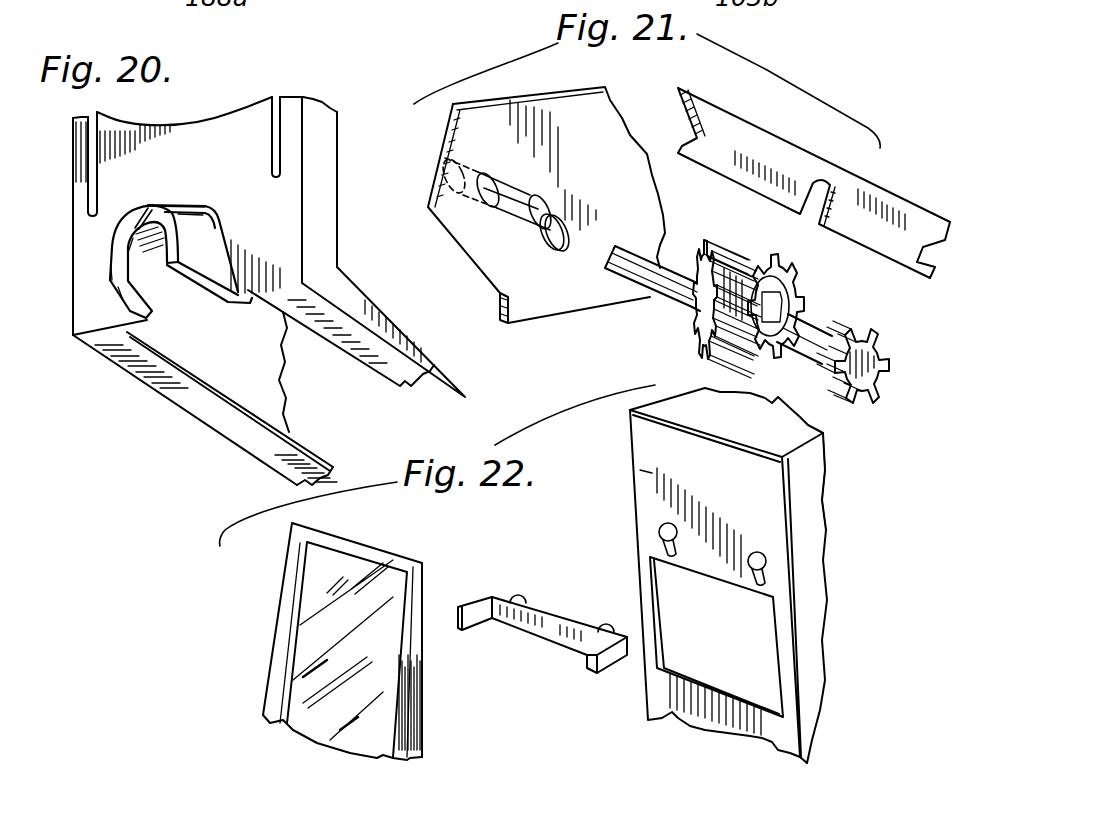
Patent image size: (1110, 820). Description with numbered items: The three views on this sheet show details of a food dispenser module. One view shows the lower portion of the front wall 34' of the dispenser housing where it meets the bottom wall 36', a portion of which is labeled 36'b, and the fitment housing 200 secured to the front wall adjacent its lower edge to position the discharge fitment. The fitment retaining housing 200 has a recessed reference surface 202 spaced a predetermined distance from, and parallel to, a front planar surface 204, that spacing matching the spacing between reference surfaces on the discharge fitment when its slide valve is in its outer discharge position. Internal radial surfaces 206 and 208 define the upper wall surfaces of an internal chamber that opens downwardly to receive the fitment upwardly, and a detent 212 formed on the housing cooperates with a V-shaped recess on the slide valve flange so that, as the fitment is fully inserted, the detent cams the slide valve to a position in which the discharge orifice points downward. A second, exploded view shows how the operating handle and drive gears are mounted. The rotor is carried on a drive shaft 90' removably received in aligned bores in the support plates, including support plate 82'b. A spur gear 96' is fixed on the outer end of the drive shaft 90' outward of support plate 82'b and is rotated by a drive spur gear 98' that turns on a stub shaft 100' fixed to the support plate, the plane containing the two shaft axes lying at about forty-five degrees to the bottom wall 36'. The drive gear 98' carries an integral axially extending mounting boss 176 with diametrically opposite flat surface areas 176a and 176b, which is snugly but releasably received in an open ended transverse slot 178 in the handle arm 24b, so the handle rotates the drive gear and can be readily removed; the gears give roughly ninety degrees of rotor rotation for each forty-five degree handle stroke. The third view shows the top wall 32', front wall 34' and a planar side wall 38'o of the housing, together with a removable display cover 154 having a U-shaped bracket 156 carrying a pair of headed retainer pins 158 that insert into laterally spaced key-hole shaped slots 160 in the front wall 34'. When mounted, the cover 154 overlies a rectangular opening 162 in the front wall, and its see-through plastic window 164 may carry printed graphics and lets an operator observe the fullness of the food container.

In FIG. 20, the front wall 34' is at (233, 216).
In FIG. 21, the front wall 34' is at (609, 471).
In FIG. 20, the bottom wall 36' is at (269, 376).
In FIG. 20, the flange portion 36'b is at (341, 361).
In FIG. 20, the fitment retaining housing 200 is at (123, 300).
In FIG. 20, the recessed reference surface 202 is at (148, 318).
In FIG. 20, the front planar surface 204 is at (112, 268).
In FIG. 20, the internal radial surface 206 is at (128, 252).
In FIG. 20, the internal radial surface 208 is at (127, 235).
In FIG. 20, the detent 212 is at (136, 212).
In FIG. 21, the stub shaft 100' is at (494, 219).
In FIG. 21, the support plate 82'b is at (546, 233).
In FIG. 21, the drive shaft 90' is at (716, 305).
In FIG. 21, the drive spur gear 98' is at (676, 332).
In FIG. 21, the mounting boss 176 is at (813, 317).
In FIG. 21, the flat surface area 176a is at (742, 362).
In FIG. 21, the flat surface area 176b is at (805, 318).
In FIG. 21, the open ended transverse slot 178 is at (812, 222).
In FIG. 21, the arm of operating handle 24b is at (777, 108).
In FIG. 21, the spur gear 96' is at (880, 362).
In FIG. 21, the top wall 32' is at (720, 560).
In FIG. 21, the side wall 38'o is at (857, 486).
In FIG. 21, the key-hole shaped slots 160 is at (753, 582).
In FIG. 21, the rectangular opening 162 is at (777, 668).
In FIG. 22, the display cover 154 is at (273, 636).
In FIG. 22, the see-through plastic window 164 is at (313, 588).
In FIG. 22, the U-shaped bracket 156 is at (468, 605).
In FIG. 22, the headed retainer pins 158 is at (607, 622).